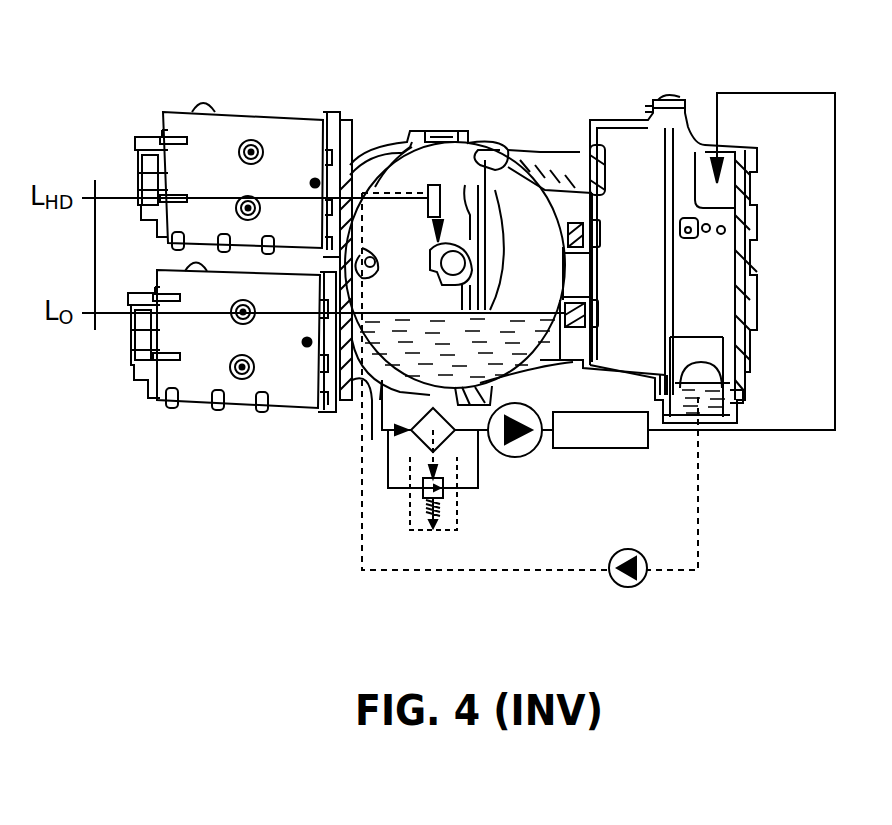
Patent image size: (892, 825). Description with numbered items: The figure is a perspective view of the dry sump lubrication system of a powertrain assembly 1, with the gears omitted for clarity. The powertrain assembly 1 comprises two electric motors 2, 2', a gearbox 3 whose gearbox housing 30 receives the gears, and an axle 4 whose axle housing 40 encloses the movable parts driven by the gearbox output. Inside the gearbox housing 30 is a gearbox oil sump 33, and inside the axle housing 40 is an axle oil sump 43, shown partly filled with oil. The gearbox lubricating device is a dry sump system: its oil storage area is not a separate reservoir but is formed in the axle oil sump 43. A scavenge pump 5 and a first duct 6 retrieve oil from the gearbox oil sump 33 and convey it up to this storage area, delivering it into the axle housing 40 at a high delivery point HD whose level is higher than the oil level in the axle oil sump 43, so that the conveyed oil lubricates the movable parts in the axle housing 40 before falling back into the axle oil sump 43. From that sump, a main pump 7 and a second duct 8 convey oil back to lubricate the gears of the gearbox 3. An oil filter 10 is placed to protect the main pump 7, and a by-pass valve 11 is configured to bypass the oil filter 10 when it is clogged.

The powertrain assembly 1 is at (583, 81).
The electric motor 2 is at (237, 147).
The electric motor 2' is at (232, 373).
The gearbox 3 is at (638, 92).
The gearbox housing 30 is at (684, 100).
The gearbox oil sump 33 is at (727, 390).
The axle 4 is at (447, 90).
The axle housing 40 is at (402, 147).
The axle oil sump 43 is at (375, 382).
The scavenge pump 5 is at (635, 586).
The first duct 6 is at (540, 572).
The main pump 7 is at (518, 458).
The second duct 8 is at (810, 432).
The oil filter 10 is at (423, 438).
The by-pass valve 11 is at (423, 498).
The high delivery point HD is at (441, 195).